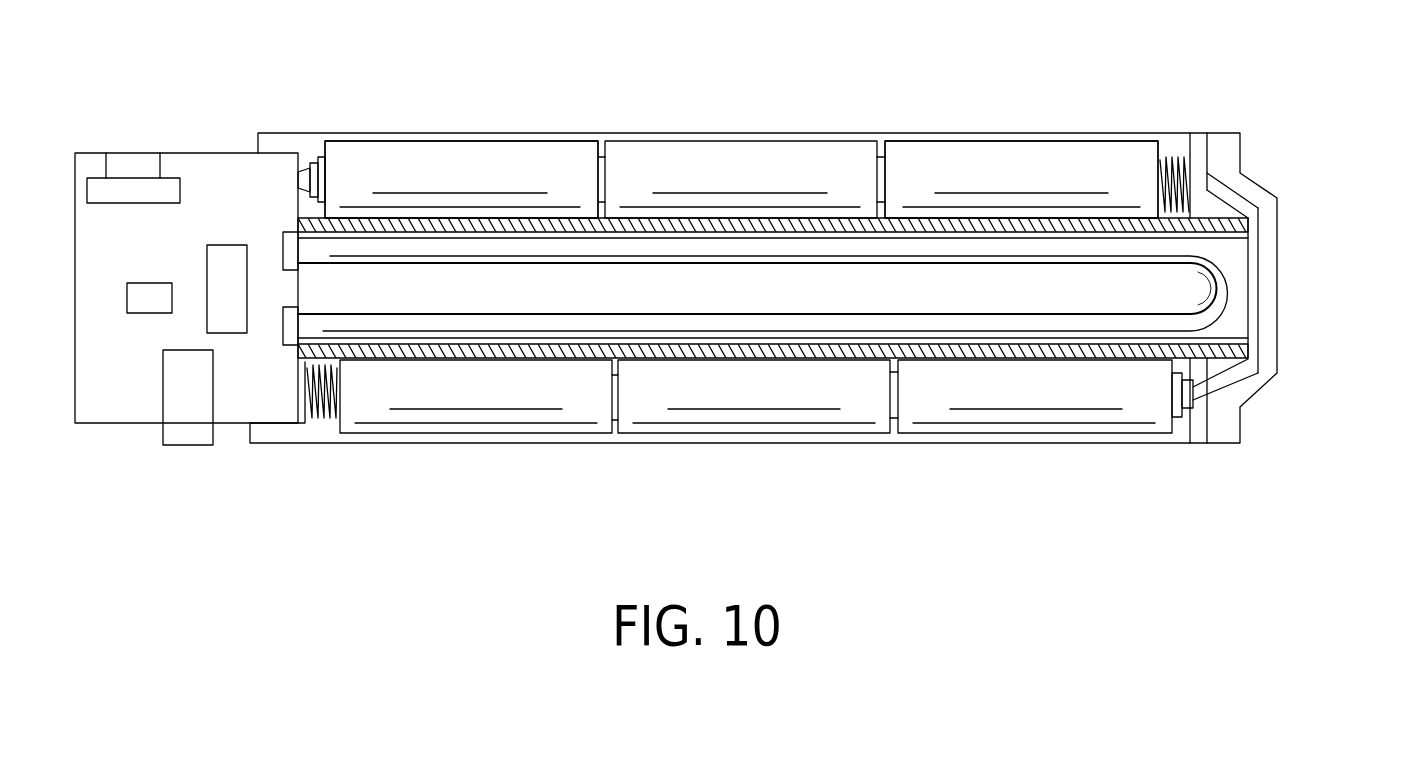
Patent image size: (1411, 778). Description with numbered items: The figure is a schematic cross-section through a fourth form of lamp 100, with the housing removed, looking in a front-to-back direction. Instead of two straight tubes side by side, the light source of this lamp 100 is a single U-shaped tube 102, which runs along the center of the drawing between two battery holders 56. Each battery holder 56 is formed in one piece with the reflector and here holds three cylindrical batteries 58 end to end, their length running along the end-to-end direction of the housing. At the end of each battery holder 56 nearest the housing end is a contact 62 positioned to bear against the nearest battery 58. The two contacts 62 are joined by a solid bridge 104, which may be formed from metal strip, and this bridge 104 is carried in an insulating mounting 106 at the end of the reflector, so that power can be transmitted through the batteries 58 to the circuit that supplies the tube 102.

The lamp 100 is at (997, 470).
The battery holder 56 is at (308, 147).
The U-shaped tube 102 is at (457, 160).
The battery 58 is at (987, 160).
The contact 62 is at (1168, 157).
The insulating mounting 106 is at (1260, 228).
The solid bridge 104 is at (1237, 370).